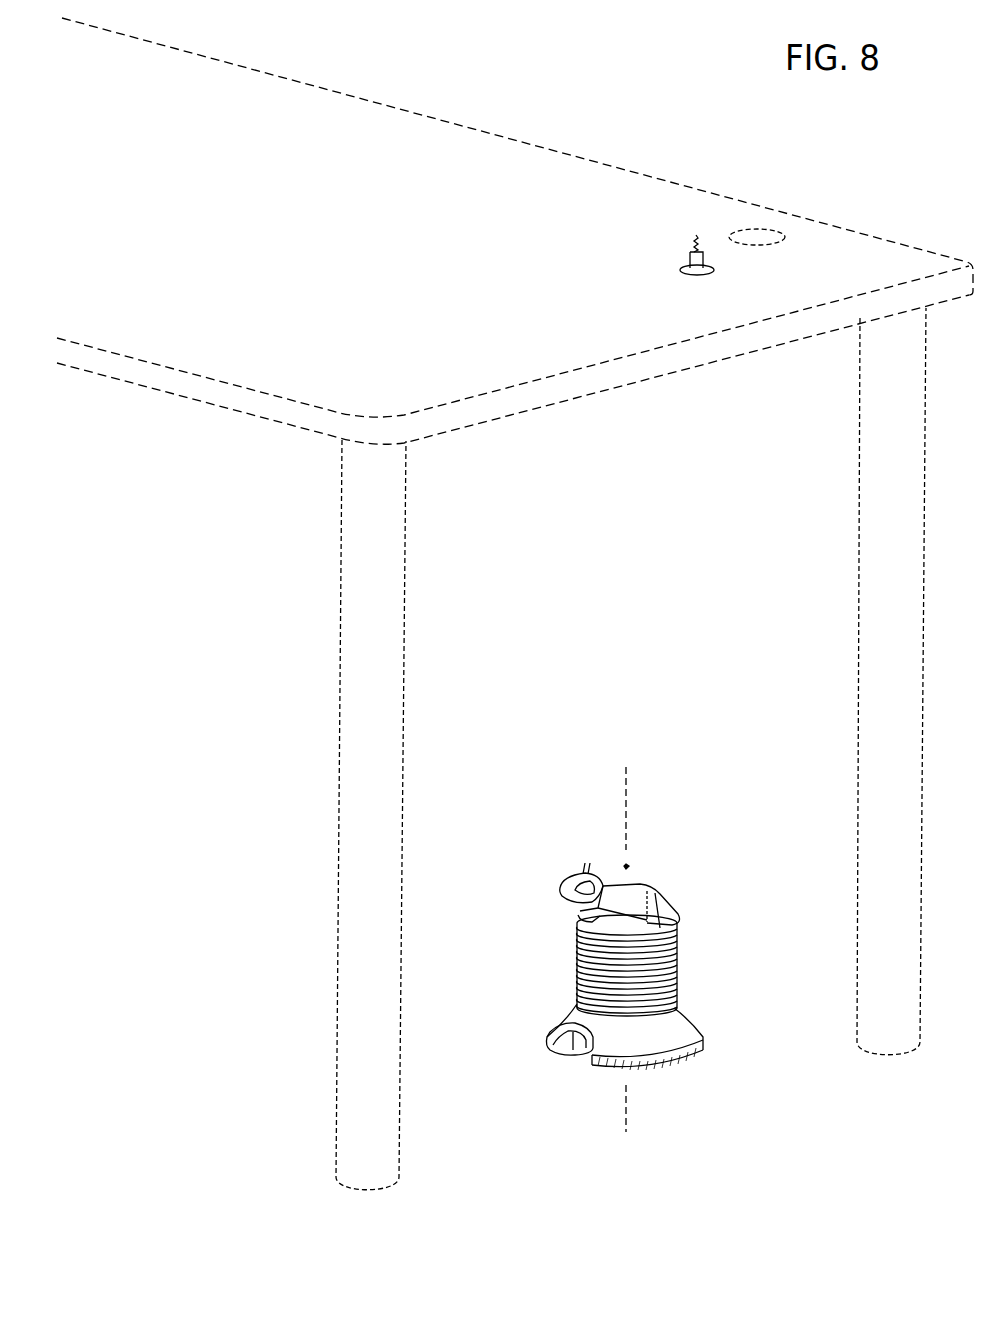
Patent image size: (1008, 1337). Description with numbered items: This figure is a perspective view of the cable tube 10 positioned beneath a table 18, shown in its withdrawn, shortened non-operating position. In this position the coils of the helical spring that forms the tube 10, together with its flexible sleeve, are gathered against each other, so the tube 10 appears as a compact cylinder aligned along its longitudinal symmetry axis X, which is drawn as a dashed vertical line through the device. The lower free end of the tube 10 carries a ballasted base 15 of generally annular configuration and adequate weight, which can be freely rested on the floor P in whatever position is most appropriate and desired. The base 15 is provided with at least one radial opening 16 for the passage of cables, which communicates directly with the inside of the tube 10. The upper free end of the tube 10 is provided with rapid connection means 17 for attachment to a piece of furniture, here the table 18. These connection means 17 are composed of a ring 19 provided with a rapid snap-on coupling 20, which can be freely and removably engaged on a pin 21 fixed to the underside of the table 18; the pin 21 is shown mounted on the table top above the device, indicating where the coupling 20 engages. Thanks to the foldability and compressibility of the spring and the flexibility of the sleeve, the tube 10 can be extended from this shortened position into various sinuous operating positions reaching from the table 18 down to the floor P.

The cable tube 10 is at (647, 966).
The ballasted base 15 is at (684, 1066).
The radial opening 16 is at (573, 1036).
The rapid connection means 17 is at (678, 913).
The table 18 is at (326, 226).
The ring 19 is at (577, 917).
The rapid snap-on coupling 20 is at (583, 868).
The pin 21 is at (681, 267).
The longitudinal symmetry axis X is at (631, 822).
The floor P is at (542, 1218).